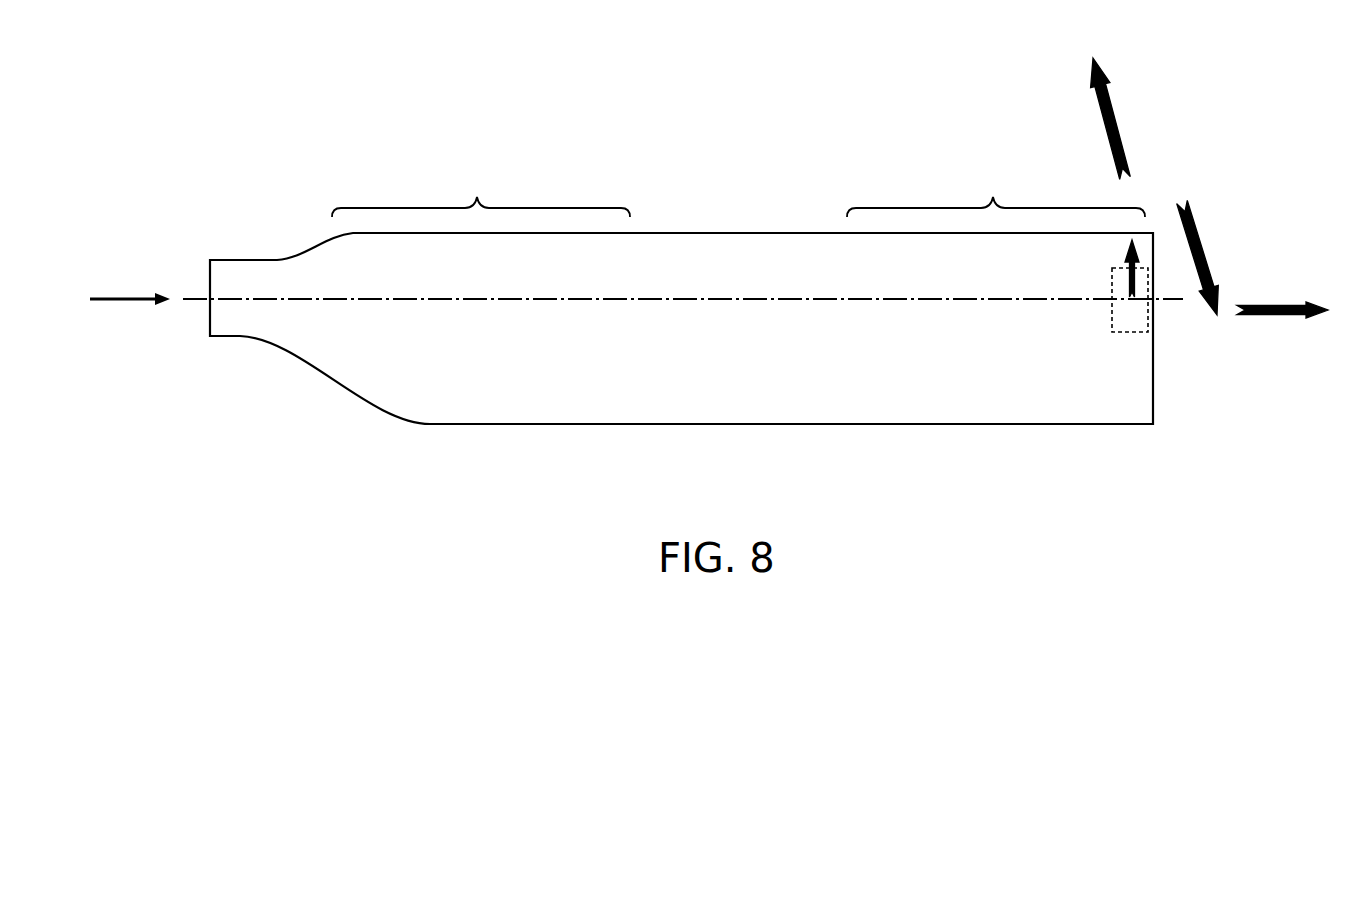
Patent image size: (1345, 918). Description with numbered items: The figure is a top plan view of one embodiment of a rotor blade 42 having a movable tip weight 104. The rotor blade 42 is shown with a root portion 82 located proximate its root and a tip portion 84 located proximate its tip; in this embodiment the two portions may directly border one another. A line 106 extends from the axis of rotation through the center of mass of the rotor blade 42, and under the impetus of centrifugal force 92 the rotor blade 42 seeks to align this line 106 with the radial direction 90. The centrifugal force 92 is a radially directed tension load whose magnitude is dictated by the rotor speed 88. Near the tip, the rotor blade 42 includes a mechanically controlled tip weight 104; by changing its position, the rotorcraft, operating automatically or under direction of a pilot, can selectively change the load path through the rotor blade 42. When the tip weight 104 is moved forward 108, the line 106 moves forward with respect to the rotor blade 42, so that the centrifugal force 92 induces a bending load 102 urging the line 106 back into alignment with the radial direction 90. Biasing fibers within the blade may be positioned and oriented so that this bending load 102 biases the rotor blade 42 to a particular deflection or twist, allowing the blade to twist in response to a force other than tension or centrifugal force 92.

The rotor blade 42 is at (677, 250).
The root portion 82 is at (477, 197).
The tip portion 84 is at (993, 197).
The rotor speed 88 is at (1120, 113).
The radial direction 90 is at (121, 299).
The centrifugal force 92 is at (1262, 318).
The bending load 102 is at (1202, 233).
The tip weight 104 is at (1127, 315).
The line 106 is at (757, 300).
The forward 108 is at (1127, 253).